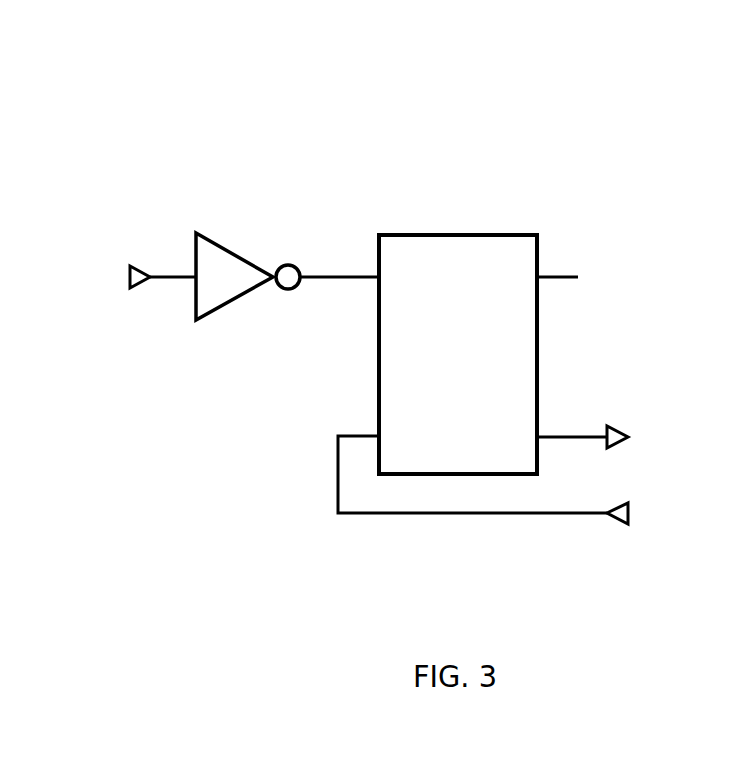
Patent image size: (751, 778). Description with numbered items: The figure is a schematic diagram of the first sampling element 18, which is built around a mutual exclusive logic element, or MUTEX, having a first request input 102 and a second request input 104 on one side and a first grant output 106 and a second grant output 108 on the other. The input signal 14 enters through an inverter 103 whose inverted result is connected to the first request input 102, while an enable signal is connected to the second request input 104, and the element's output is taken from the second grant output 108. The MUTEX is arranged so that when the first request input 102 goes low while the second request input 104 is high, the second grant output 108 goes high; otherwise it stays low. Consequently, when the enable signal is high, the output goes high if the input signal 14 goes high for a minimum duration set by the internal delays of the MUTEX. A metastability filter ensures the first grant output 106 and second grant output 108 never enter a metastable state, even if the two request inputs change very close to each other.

The input signal 14 is at (137, 265).
The first sampling element 18 is at (480, 160).
The first request input 102 is at (377, 273).
The inverter 103 is at (235, 253).
The second request input 104 is at (378, 432).
The first grant output 106 is at (539, 275).
The second grant output 108 is at (539, 435).